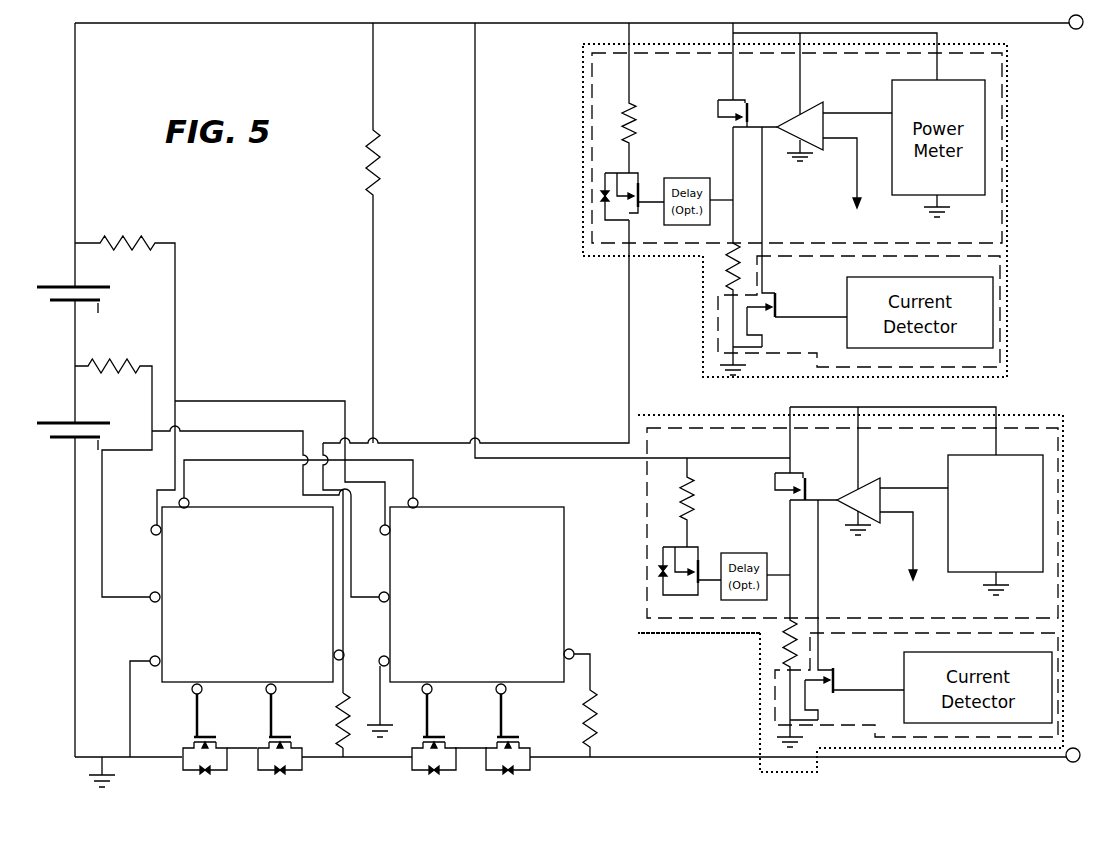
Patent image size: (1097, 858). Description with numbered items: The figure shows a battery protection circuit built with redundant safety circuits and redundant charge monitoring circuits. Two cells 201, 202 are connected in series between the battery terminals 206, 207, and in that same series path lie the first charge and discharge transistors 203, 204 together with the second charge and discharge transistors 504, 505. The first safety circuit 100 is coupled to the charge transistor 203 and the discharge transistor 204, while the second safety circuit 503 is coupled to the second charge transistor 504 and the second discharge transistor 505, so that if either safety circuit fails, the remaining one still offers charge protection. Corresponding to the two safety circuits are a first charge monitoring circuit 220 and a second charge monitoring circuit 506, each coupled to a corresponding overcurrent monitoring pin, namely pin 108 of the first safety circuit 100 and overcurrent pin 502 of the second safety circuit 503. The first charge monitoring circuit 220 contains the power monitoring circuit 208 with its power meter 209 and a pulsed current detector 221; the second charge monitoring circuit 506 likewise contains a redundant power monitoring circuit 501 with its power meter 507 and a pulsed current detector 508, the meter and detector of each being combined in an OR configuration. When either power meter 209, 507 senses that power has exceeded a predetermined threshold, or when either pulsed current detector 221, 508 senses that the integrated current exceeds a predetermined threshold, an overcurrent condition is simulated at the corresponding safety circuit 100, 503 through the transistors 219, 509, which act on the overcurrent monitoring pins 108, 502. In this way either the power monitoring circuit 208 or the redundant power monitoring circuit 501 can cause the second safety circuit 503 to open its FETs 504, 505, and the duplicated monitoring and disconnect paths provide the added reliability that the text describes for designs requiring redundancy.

The first safety circuit 100 is at (247, 596).
The overcurrent monitoring pin 108 is at (334, 651).
The cell 201 is at (106, 289).
The cell 202 is at (80, 422).
The charge transistor 203 is at (203, 736).
The discharge transistor 204 is at (278, 736).
The terminal 206 is at (1076, 29).
The terminal 207 is at (1068, 762).
The power monitoring circuit 208 is at (1002, 137).
The power meter 209 is at (916, 185).
The transistor 219 is at (632, 182).
The first charge monitoring circuit 220 is at (1007, 245).
The pulsed current detector 221 is at (857, 305).
The redundant power monitoring circuit 501 is at (1020, 427).
The overcurrent pin 502 is at (574, 650).
The second safety circuit 503 is at (476, 596).
The second charge transistor 504 is at (433, 736).
The second discharge transistor 505 is at (507, 736).
The second charge monitoring circuit 506 is at (792, 773).
The power meter 507 is at (984, 560).
The pulsed current detector 508 is at (918, 677).
The transistor 509 is at (688, 560).